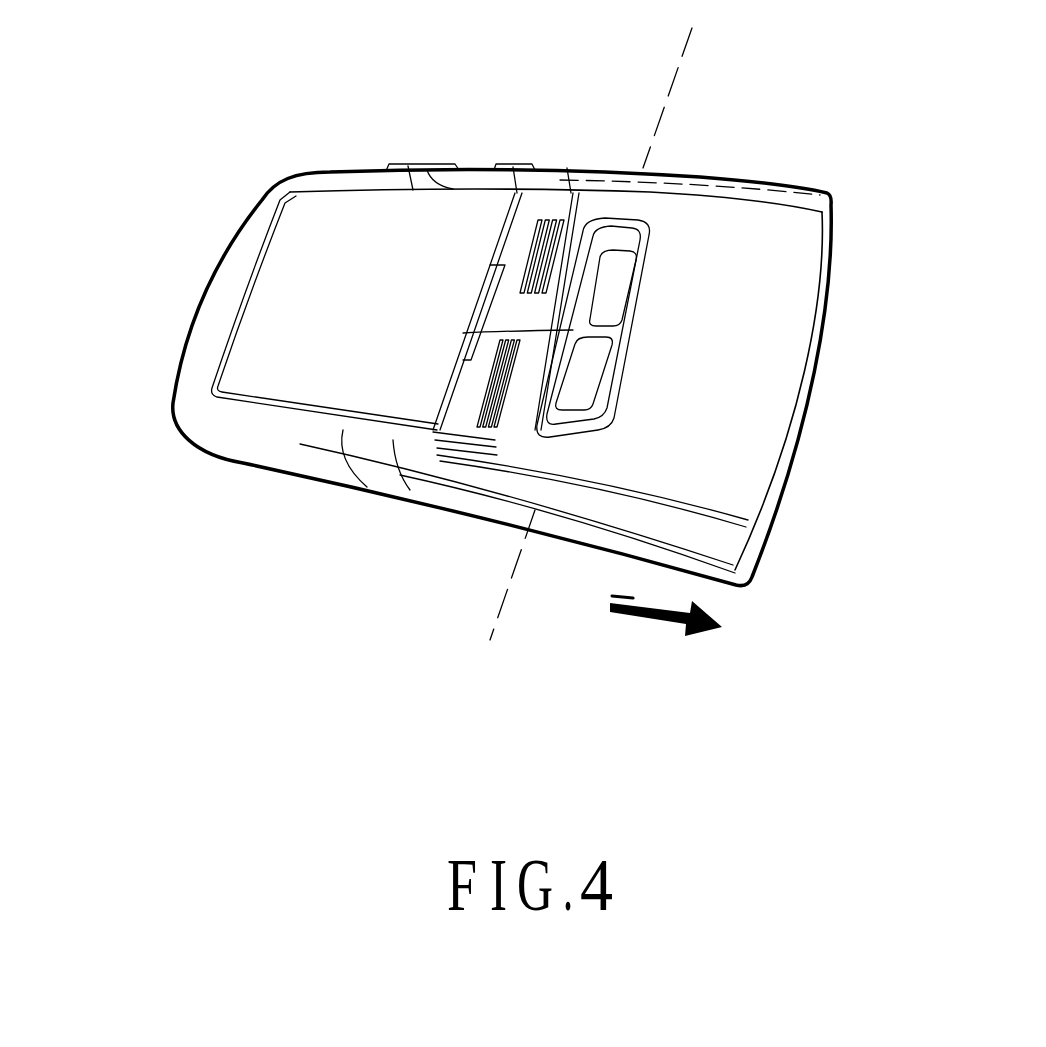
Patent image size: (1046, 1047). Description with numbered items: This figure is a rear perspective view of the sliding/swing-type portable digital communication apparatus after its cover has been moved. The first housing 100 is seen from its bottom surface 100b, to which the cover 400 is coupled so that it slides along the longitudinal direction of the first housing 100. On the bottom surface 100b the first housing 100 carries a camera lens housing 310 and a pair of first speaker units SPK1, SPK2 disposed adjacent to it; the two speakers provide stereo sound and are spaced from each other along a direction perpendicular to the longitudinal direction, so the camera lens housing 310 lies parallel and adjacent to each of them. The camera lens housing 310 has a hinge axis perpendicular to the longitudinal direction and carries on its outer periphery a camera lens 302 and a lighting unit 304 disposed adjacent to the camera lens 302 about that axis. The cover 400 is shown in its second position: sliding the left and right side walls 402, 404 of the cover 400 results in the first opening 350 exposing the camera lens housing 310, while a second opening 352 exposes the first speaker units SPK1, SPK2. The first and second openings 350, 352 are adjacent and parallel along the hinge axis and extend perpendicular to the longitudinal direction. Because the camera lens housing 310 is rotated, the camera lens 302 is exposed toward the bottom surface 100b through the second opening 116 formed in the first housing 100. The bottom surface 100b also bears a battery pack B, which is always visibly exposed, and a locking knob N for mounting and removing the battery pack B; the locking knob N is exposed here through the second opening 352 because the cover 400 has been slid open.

The first housing 100 is at (206, 278).
The bottom surface 100b is at (193, 380).
The second opening 116 is at (463, 333).
The battery pack B is at (293, 237).
The locking knob N is at (487, 277).
The left side wall 402 is at (515, 192).
The second opening 352 is at (575, 195).
The first speaker unit SPK1 is at (549, 218).
The first speaker unit SPK2 is at (464, 418).
The camera lens housing 310 is at (637, 227).
The camera lens 302 is at (623, 275).
The lighting unit 304 is at (590, 377).
The cover 400 is at (845, 401).
The first opening 350 is at (568, 430).
The right side wall 404 is at (500, 512).